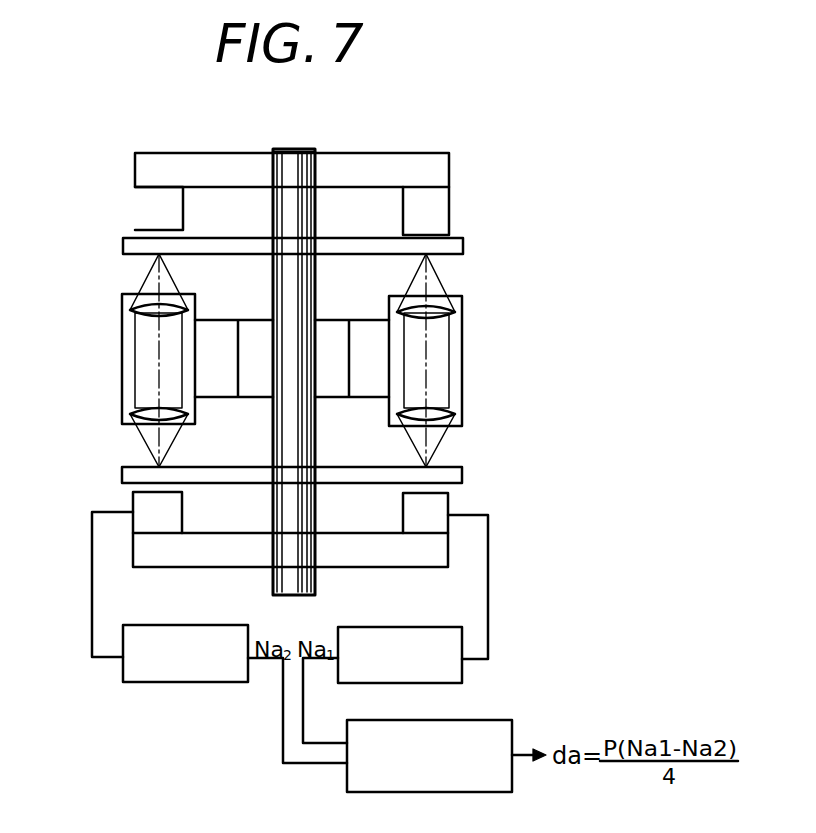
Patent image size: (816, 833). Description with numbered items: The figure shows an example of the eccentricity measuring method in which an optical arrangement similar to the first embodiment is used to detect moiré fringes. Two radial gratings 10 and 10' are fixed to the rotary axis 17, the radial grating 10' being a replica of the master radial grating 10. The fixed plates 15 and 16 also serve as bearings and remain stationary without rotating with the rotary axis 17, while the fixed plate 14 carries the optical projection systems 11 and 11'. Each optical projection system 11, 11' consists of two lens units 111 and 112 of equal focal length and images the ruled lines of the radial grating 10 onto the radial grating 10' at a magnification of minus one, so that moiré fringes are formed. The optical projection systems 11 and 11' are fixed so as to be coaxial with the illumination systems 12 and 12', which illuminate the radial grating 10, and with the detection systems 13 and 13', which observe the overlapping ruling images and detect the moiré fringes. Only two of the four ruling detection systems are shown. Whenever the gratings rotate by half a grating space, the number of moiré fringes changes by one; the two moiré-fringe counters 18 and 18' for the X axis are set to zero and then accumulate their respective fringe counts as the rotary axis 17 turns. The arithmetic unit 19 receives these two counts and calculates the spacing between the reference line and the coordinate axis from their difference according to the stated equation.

The radial grating 10 is at (327, 249).
The radial grating 10' is at (329, 471).
The optical projection system 11 is at (477, 360).
The optical projection system 11' is at (113, 360).
The lens unit 111 is at (445, 305).
The lens unit 112 is at (447, 412).
The illumination system 12 is at (457, 211).
The illumination system 12' is at (121, 208).
The detection system 13 is at (482, 513).
The detection system 13' is at (117, 502).
The fixed plate 14 is at (365, 392).
The fixed plate 15 is at (382, 165).
The fixed plate 16 is at (363, 560).
The rotary axis 17 is at (284, 176).
The moiré-fringe counter 18 is at (427, 609).
The moiré-fringe counter 18' is at (170, 628).
The arithmetic unit 19 is at (425, 793).